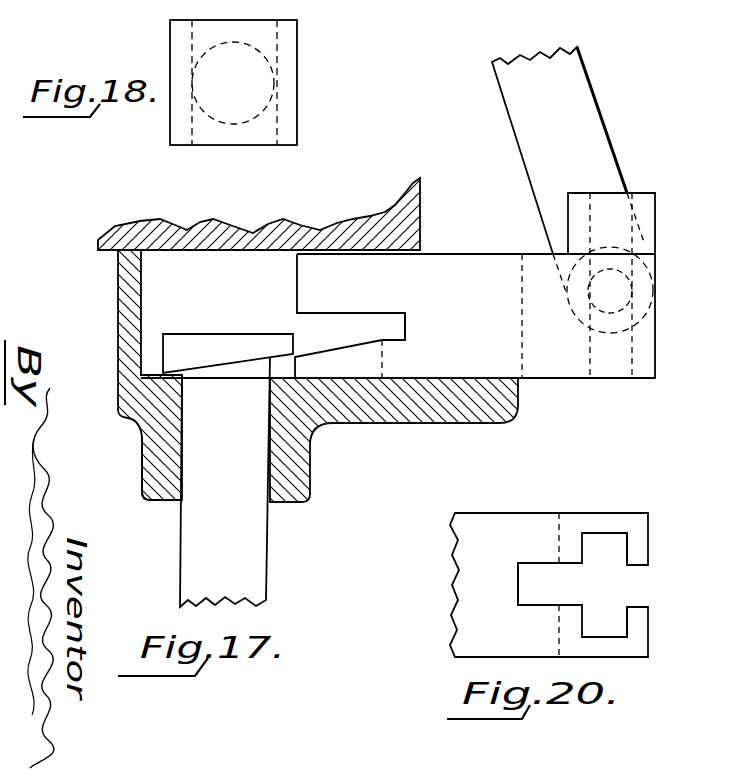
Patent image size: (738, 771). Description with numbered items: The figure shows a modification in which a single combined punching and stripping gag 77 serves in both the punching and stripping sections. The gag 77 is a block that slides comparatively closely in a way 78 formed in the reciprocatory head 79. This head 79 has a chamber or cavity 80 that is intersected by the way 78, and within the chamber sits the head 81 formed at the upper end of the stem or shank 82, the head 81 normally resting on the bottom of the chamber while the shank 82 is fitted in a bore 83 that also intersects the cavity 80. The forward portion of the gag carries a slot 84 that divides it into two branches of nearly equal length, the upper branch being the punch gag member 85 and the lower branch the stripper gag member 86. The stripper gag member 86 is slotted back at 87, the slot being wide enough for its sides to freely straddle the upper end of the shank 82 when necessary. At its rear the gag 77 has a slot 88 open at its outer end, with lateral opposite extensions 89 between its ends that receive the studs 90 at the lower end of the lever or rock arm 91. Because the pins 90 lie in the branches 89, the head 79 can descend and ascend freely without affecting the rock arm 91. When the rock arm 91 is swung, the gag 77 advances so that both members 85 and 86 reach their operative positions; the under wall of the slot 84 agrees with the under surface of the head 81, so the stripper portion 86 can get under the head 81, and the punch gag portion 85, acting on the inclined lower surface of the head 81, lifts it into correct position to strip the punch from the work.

In FIG. 17, the combined punching and stripping gag 77 is at (545, 380).
In FIG. 20, the combined punching and stripping gag 77 is at (528, 517).
In FIG. 17, the way 78 is at (372, 423).
In FIG. 17, the reciprocatory head 79 is at (413, 215).
In FIG. 17, the chamber or cavity 80 is at (150, 306).
In FIG. 18, the head 81 is at (228, 145).
In FIG. 17, the head 81 is at (217, 338).
In FIG. 18, the stem or shank 82 is at (262, 115).
In FIG. 17, the stem or shank 82 is at (258, 555).
In FIG. 17, the bore 83 is at (178, 485).
In FIG. 17, the slot 84 is at (405, 332).
In FIG. 17, the punch gag member 85 is at (312, 285).
In FIG. 17, the stripper gag member 86 is at (335, 362).
In FIG. 17, the slot 87 is at (383, 362).
In FIG. 17, the slot 88 is at (530, 296).
In FIG. 20, the slot 88 is at (538, 593).
In FIG. 17, the lateral opposite extensions 89 is at (630, 360).
In FIG. 20, the lateral opposite extensions 89 is at (610, 540).
In FIG. 17, the studs 90 is at (620, 308).
In FIG. 17, the lever or rock arm 91 is at (600, 133).